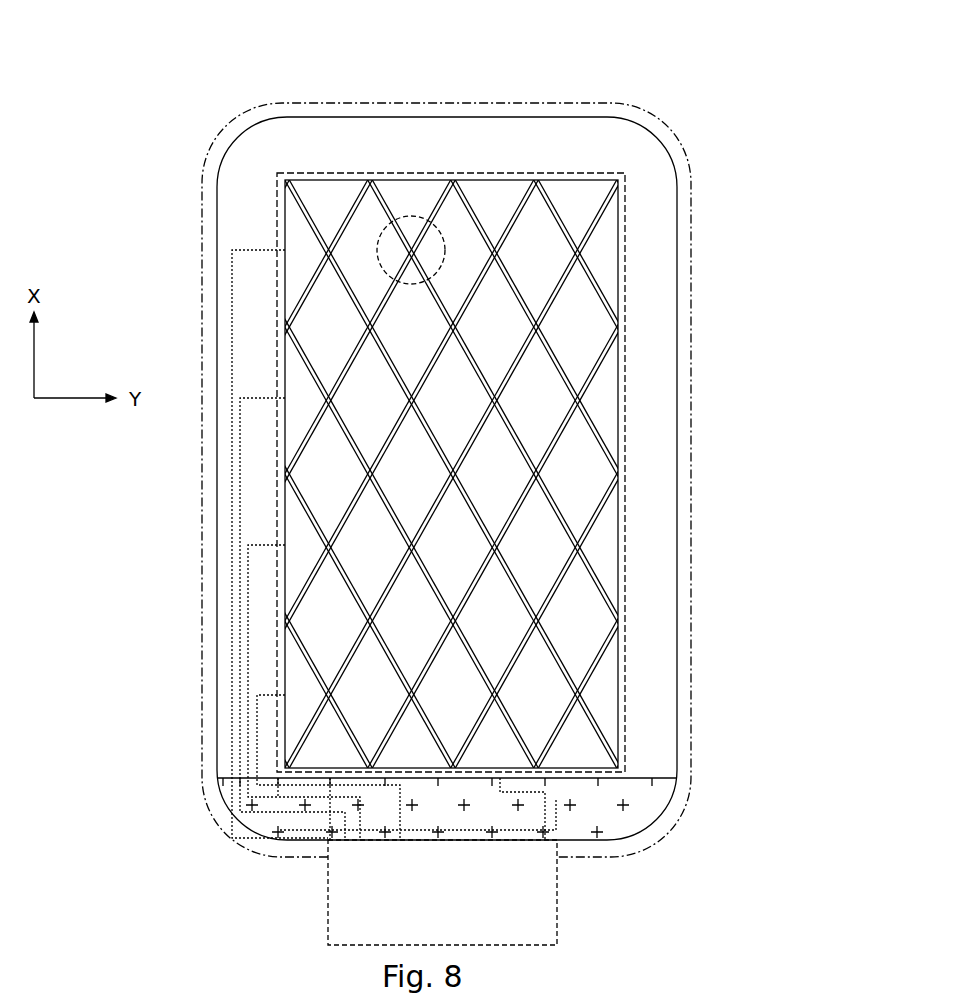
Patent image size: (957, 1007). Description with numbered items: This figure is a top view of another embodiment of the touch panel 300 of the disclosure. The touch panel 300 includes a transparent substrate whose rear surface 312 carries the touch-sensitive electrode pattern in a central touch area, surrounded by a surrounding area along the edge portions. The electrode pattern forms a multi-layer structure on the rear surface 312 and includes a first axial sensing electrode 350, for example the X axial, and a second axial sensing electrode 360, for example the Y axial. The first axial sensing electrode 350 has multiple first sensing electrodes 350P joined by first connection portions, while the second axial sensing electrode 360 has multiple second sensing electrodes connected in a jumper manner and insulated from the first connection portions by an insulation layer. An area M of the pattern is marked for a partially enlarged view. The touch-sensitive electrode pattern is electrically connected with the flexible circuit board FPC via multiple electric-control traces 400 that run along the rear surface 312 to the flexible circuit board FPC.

The touch panel 300 is at (168, 135).
The rear surface 312 is at (660, 492).
The first axial sensing electrode 350 is at (410, 176).
The first sensing electrode 350P is at (576, 205).
The area M is at (418, 215).
The second axial sensing electrode 360 is at (620, 247).
The electric-control traces 400 is at (248, 603).
The flexible circuit board FPC is at (355, 892).